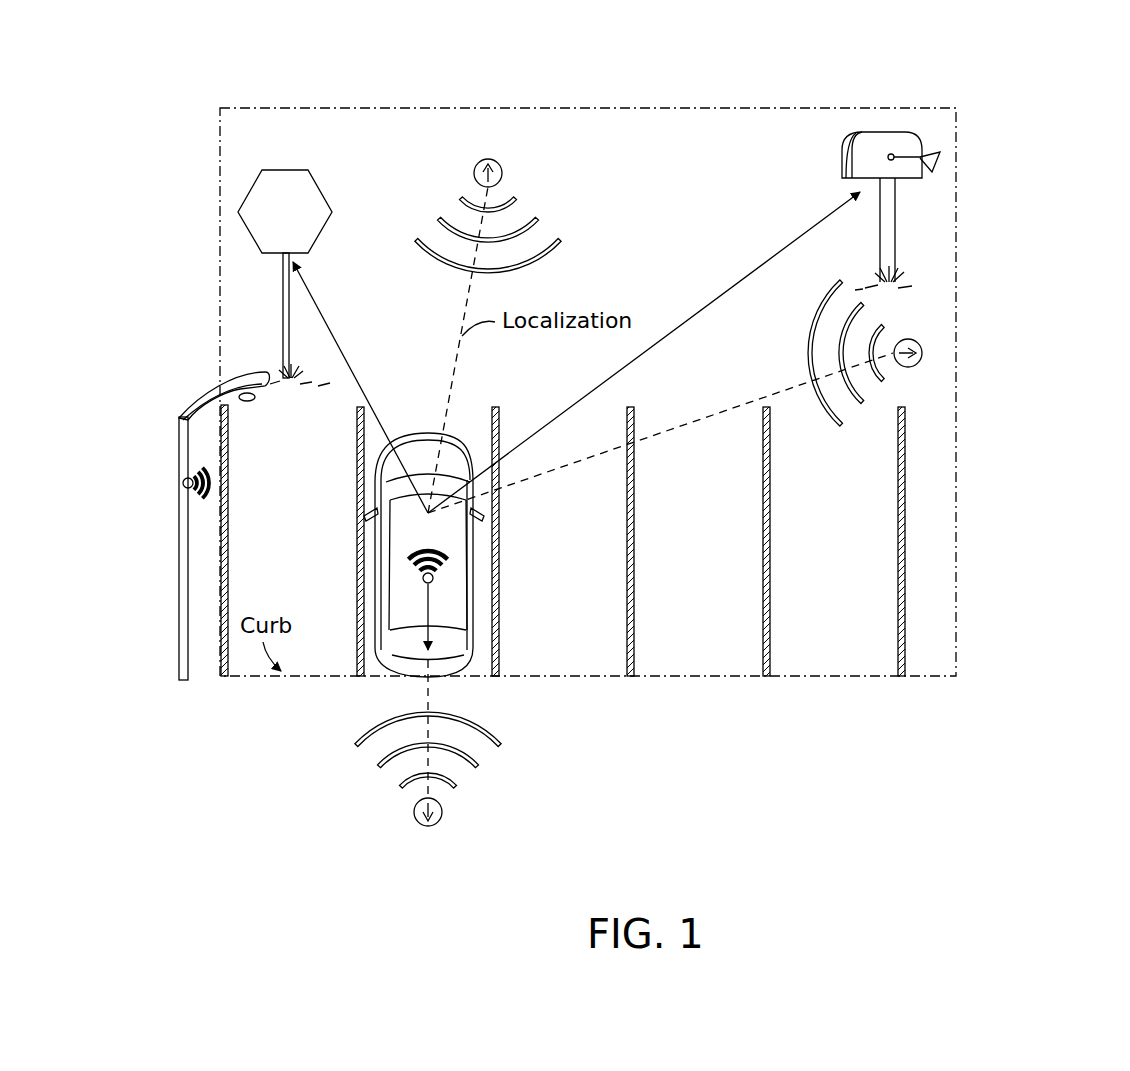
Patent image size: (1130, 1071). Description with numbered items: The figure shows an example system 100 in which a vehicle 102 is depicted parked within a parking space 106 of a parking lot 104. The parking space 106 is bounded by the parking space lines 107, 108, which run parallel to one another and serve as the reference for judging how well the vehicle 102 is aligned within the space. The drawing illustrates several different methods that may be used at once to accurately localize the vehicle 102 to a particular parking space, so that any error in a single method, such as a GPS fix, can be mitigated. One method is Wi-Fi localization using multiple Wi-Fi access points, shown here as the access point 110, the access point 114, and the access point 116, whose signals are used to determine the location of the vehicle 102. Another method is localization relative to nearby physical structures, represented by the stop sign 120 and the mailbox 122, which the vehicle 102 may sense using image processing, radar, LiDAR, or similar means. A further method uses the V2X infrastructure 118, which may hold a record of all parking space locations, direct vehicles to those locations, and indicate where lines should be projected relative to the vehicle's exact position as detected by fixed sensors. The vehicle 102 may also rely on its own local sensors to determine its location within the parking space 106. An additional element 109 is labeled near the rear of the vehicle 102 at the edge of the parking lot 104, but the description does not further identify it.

The system 100 is at (106, 60).
The vehicle 102 is at (414, 668).
The parking lot 104 is at (707, 99).
The parking space 106 is at (486, 381).
The parking space line 107 is at (501, 416).
The parking space line 108 is at (351, 440).
The parking space boundary 109 is at (467, 687).
The Wi-Fi access point 110 is at (519, 189).
The Wi-Fi access point 114 is at (927, 334).
The Wi-Fi access point 116 is at (412, 807).
The V2X infrastructure 118 is at (172, 484).
The stop sign 120 is at (323, 191).
The mailbox 122 is at (890, 130).